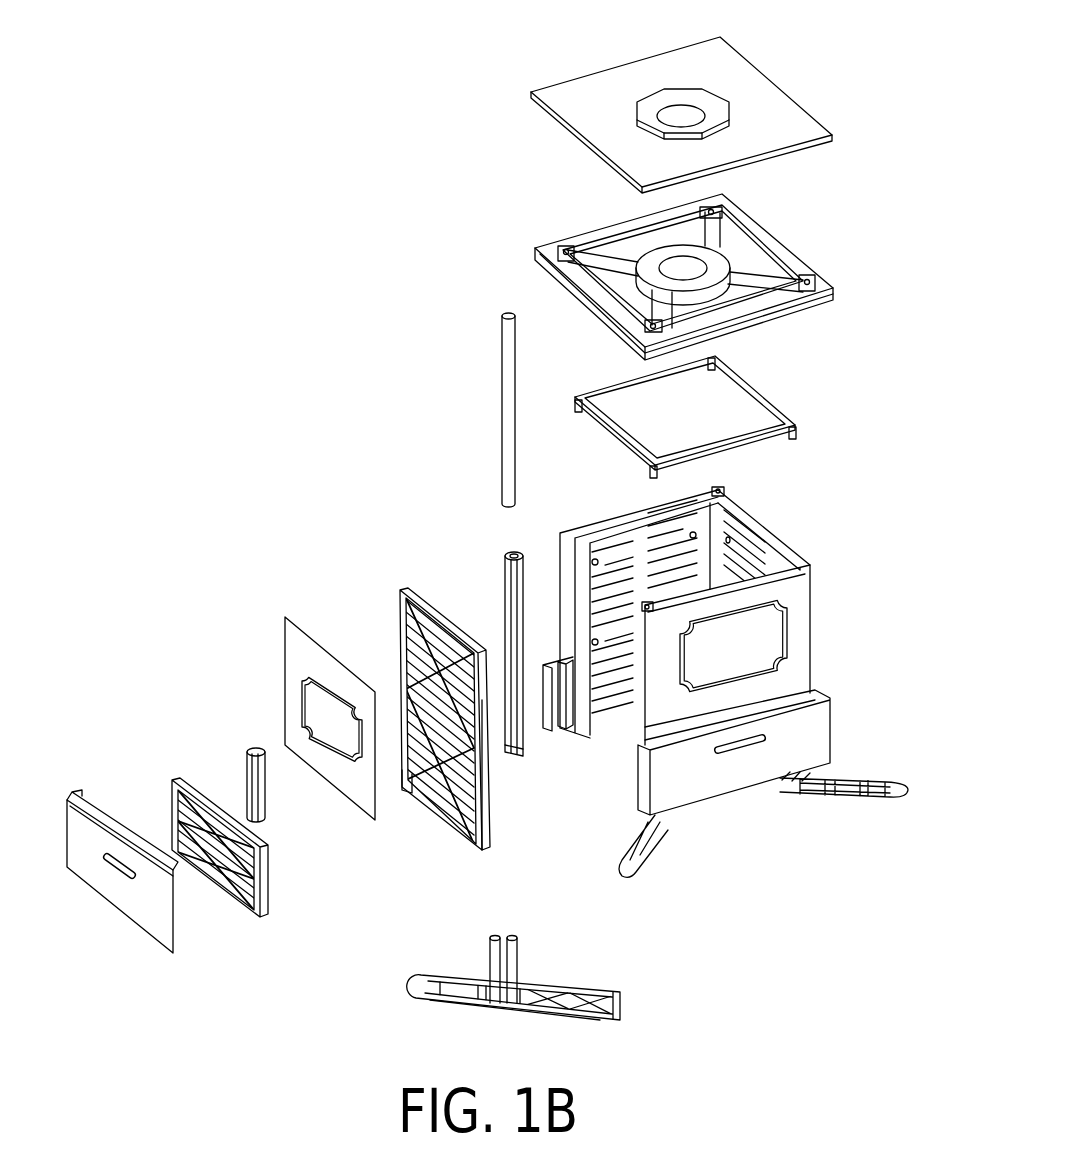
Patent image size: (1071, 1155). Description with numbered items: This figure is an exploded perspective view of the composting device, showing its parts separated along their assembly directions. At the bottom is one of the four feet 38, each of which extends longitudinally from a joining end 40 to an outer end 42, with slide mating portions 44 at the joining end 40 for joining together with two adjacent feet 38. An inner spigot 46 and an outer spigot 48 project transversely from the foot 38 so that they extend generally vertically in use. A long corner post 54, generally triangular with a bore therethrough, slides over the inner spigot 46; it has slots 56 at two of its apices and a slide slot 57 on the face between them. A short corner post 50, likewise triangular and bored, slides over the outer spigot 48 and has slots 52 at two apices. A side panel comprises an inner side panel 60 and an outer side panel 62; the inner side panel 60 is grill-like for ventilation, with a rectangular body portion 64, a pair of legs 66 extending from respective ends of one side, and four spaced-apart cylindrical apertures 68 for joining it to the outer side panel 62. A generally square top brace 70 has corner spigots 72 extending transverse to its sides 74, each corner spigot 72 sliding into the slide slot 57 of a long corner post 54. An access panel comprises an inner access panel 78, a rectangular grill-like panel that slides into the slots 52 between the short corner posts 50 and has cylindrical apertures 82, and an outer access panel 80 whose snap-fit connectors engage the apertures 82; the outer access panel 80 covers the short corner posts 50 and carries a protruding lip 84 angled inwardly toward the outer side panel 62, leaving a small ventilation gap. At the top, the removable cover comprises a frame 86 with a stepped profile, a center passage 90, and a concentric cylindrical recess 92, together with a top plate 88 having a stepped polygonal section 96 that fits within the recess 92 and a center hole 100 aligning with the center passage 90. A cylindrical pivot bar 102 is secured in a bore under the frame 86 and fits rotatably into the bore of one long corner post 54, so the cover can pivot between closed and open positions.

The foot 38 is at (487, 1033).
The joining end 40 is at (563, 989).
The outer end 42 is at (410, 1017).
The slide mating portions 44 is at (623, 1027).
The inner spigot 46 is at (548, 945).
The outer spigot 48 is at (462, 945).
The short corner post 50 is at (212, 750).
The slots 52 is at (212, 688).
The long corner post 54 is at (455, 612).
The slots 56 is at (562, 777).
The slide slot 57 is at (453, 484).
The inner side panel 60 is at (378, 690).
The outer side panel 62 is at (267, 690).
The rectangular body portion 64 is at (432, 686).
The leg 66 is at (421, 820).
The cylindrical apertures 68 is at (535, 785).
The top brace 70 is at (747, 409).
The corner spigots 72 is at (747, 418).
The sides 74 is at (752, 437).
The inner access panel 78 is at (208, 906).
The outer access panel 80 is at (113, 911).
The cylindrical apertures 82 is at (160, 783).
The protruding lip 84 is at (115, 793).
The frame 86 is at (727, 277).
The top plate 88 is at (725, 115).
The center passage 90 is at (600, 251).
The cylindrical recess 92 is at (558, 275).
The stepped polygonal section 96 is at (587, 79).
The center hole 100 is at (788, 142).
The cylindrical pivot bar 102 is at (451, 410).